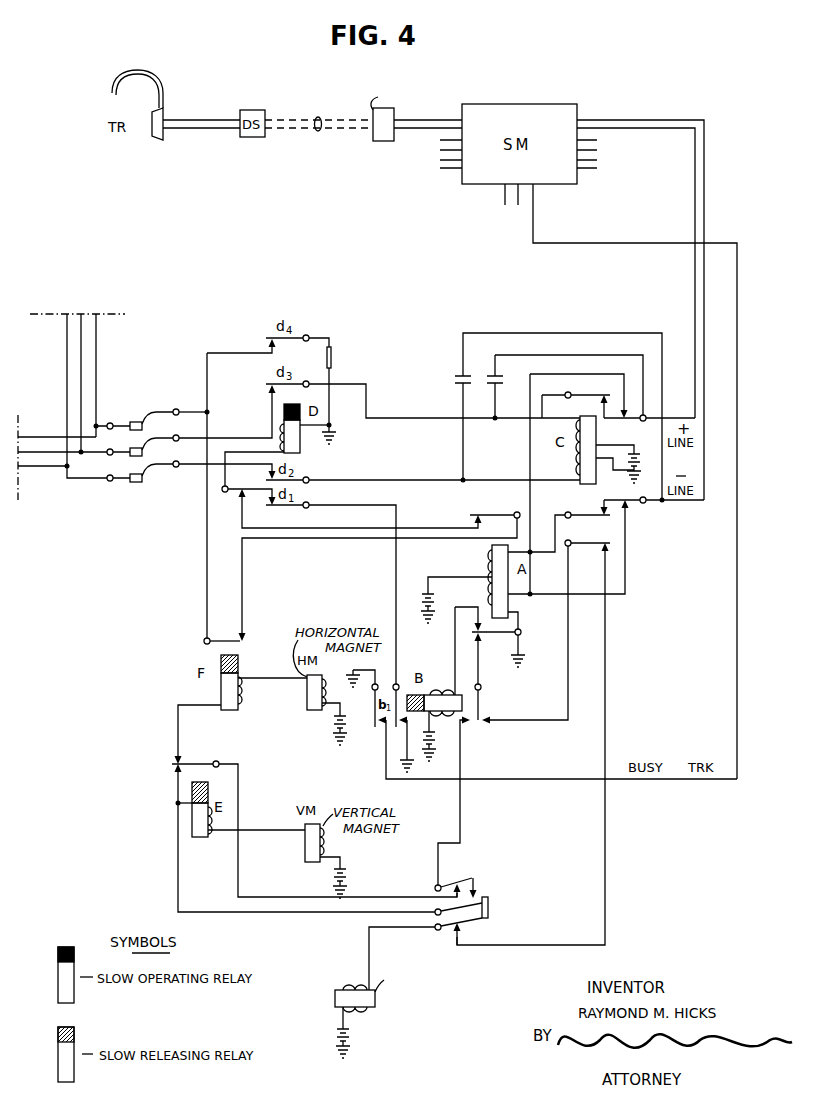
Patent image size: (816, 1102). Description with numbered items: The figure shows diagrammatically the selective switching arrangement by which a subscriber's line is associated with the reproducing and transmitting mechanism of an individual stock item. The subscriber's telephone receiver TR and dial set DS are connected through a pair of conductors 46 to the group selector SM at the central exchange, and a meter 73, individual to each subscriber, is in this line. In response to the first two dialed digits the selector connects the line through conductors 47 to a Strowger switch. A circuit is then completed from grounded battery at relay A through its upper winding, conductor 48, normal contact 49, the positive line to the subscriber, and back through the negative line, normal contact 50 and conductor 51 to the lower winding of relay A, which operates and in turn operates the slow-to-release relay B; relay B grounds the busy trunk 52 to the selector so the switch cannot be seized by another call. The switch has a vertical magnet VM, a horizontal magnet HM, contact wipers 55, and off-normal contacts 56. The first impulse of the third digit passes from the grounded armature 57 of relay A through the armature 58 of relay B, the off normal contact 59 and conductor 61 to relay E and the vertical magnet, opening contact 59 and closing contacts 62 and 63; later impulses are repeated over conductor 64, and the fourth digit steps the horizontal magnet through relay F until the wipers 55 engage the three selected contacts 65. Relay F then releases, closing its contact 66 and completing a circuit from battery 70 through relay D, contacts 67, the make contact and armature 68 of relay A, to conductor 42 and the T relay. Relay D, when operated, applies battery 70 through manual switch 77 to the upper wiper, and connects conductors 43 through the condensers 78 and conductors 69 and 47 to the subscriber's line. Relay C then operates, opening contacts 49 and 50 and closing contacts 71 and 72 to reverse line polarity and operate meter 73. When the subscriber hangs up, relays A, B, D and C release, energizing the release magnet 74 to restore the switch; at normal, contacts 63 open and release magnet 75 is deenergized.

The conductor 42 is at (95, 335).
The conductors 43 is at (62, 337).
The pair of conductors 46 is at (318, 131).
The conductors 47 is at (707, 212).
The conductor 48 is at (565, 374).
The normal contact 49 is at (628, 420).
The normal contact 50 is at (630, 504).
The conductor 51 is at (614, 600).
The busy trunk 52 is at (737, 724).
The contact wipers 55 is at (163, 463).
The off-normal contacts 56 is at (497, 909).
The grounded armature 57 is at (490, 644).
The armature 58 is at (482, 697).
The off normal contact 59 is at (484, 898).
The conductor 61 is at (292, 917).
The contact 62 is at (459, 880).
The contacts 63 is at (468, 933).
The conductor 64 is at (396, 897).
The contacts 65 is at (136, 437).
The contact 66 is at (249, 640).
The contacts 67 is at (252, 498).
The make contact and armature 68 is at (487, 514).
The conductors 69 is at (556, 335).
The grounded battery 70 is at (340, 437).
The contact 71 is at (603, 398).
The contact 72 is at (598, 506).
The meter 73 is at (387, 141).
The release magnet 74 is at (380, 1000).
The release magnet 75 is at (598, 548).
The manual switch 77 is at (333, 360).
The condensers 78 is at (475, 375).